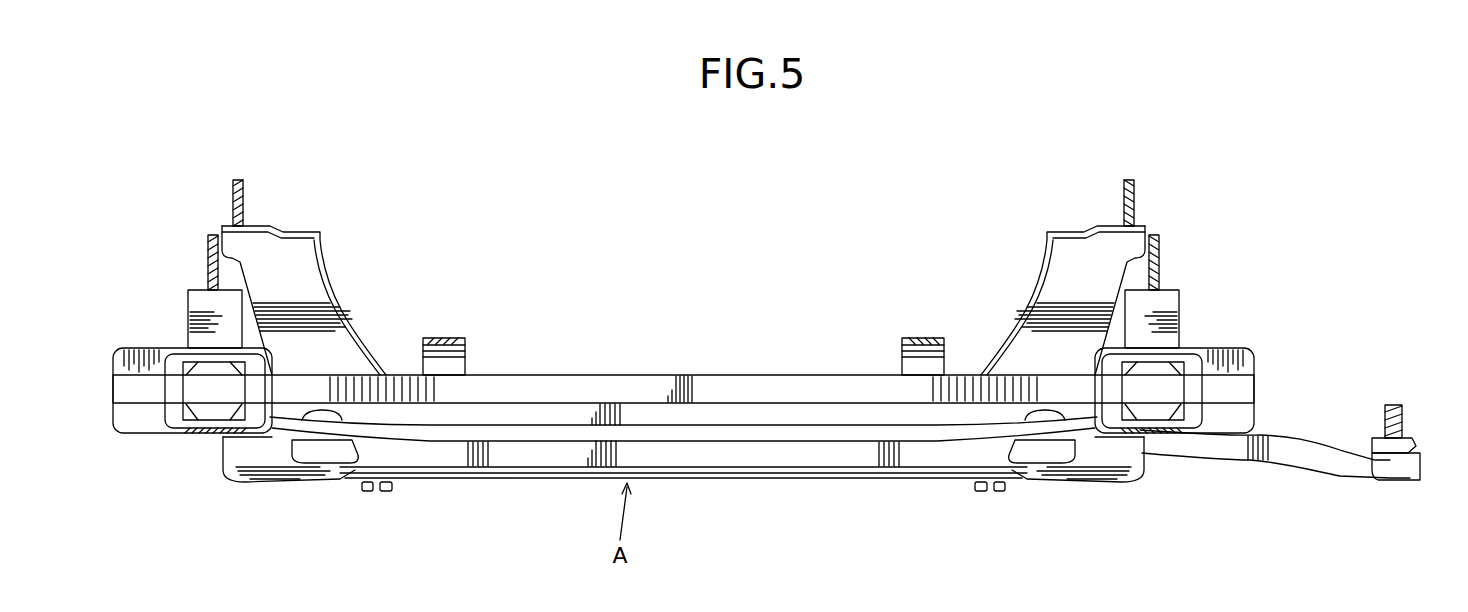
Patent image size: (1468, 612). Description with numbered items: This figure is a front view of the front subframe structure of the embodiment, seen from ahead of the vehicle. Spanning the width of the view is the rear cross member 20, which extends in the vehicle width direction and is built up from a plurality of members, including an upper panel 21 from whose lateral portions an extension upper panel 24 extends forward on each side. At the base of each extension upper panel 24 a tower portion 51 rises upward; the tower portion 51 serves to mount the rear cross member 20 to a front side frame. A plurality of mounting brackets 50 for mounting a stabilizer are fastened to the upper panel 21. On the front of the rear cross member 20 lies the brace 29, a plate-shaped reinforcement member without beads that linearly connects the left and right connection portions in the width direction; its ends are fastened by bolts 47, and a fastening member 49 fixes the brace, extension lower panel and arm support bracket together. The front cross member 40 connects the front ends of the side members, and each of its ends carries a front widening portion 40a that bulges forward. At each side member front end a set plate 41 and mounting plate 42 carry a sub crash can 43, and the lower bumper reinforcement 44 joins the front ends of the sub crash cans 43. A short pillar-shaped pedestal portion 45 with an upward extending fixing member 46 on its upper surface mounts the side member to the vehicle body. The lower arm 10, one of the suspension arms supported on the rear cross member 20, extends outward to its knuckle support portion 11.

The lower arm 10 is at (1311, 430).
The knuckle support portion 11 is at (1405, 420).
The rear cross member 20 is at (801, 386).
The upper panel 21 is at (848, 457).
The extension upper panel 24 is at (417, 455).
The brace 29 is at (794, 490).
The front cross member 40 is at (715, 442).
The front widening portion 40a is at (288, 430).
The set plate 41 is at (122, 352).
The mounting plate 42 is at (167, 362).
The sub crash can 43 is at (205, 432).
The lower bumper reinforcement 44 is at (720, 385).
The pedestal portion 45 is at (188, 300).
The fixing member 46 is at (208, 240).
The bolt 47 is at (386, 492).
The fastening member 49 is at (365, 492).
The mounting bracket 50 is at (440, 338).
The tower portion 51 is at (330, 263).